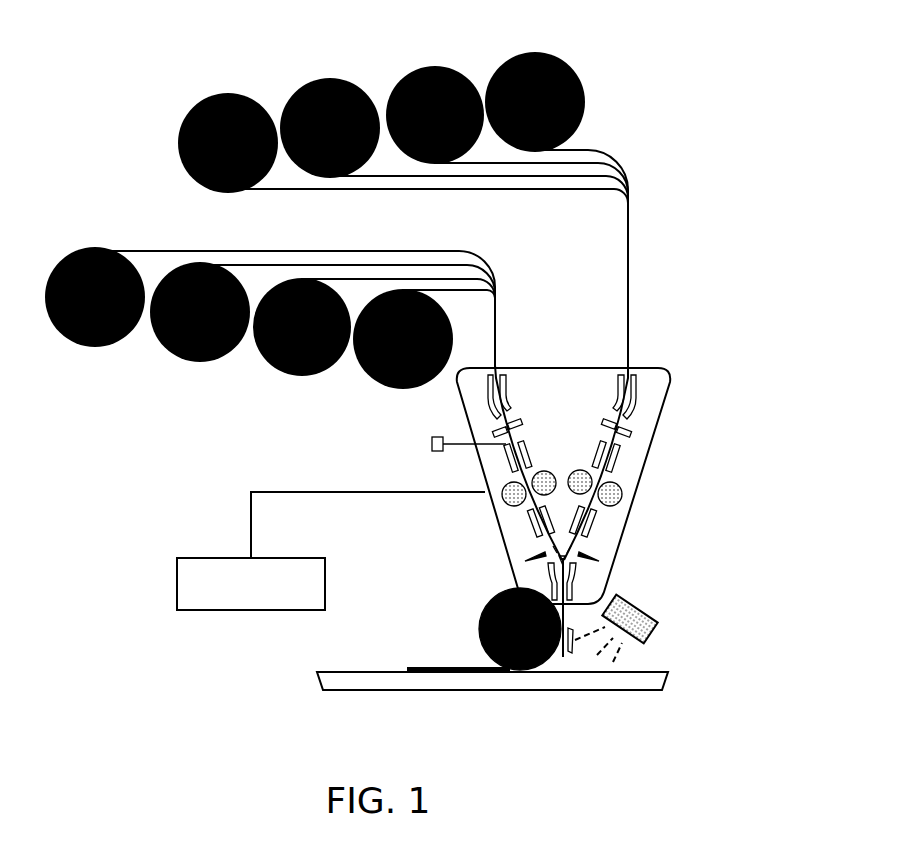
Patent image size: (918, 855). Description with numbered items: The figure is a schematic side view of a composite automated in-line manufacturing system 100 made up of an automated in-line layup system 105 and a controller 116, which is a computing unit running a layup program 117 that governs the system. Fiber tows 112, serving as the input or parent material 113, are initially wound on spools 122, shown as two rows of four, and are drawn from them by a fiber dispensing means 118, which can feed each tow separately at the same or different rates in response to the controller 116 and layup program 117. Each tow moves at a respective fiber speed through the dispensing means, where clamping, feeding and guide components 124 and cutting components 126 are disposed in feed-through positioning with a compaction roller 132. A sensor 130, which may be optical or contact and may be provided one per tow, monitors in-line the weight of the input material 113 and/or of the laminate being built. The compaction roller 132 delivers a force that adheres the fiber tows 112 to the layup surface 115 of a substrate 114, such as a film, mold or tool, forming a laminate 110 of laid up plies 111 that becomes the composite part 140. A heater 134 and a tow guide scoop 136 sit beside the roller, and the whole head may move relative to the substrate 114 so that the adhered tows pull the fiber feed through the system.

The composite automated in-line manufacturing system 100 is at (178, 60).
The automated in-line layup system 105 is at (708, 358).
The laminate 110 is at (430, 667).
The laid up plies 111 is at (458, 669).
The fiber tows 112 is at (629, 246).
The input material 113 is at (497, 283).
The substrate 114 is at (645, 683).
The layup surface 115 is at (337, 671).
The controller 116 is at (177, 582).
The layup program 117 is at (251, 584).
The fiber dispensing means 118 is at (557, 368).
The spools 122 is at (434, 67).
The clamping, feeding and guide components 124 is at (633, 429).
The cutting components 126 is at (526, 560).
The sensor 130 is at (431, 445).
The compaction roller 132 is at (500, 600).
The heater 134 is at (644, 606).
The tow guide scoop 136 is at (572, 632).
The composite part 140 is at (668, 672).